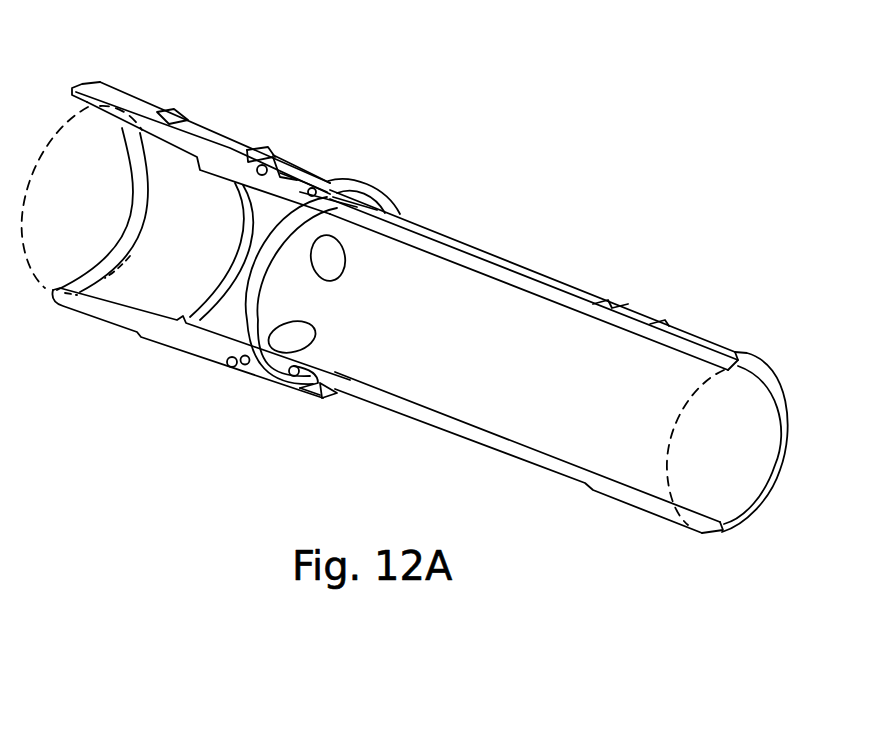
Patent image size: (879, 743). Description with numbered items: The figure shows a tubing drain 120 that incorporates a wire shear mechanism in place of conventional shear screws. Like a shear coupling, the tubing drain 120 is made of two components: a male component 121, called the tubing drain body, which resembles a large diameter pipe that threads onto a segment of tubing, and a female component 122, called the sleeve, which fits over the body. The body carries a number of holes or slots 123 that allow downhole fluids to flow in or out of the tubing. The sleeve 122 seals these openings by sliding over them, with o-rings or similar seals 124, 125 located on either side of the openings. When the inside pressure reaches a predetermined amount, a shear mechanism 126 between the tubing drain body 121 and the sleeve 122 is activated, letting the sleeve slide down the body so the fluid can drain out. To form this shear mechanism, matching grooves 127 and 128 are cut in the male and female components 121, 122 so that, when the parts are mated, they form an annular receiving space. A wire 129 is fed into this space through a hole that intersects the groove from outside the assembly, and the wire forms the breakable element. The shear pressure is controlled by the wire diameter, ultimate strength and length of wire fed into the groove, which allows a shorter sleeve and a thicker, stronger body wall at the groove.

The tubing drain 120 is at (496, 222).
The male component 121 is at (188, 137).
The female component 122 is at (321, 175).
The holes or slots 123 is at (332, 258).
The o-rings or similar seals 124 is at (240, 363).
The o-rings or similar seals 125 is at (278, 168).
The shear mechanism 126 is at (274, 276).
The groove 127 is at (328, 196).
The groove 128 is at (320, 387).
The wire 129 is at (245, 306).